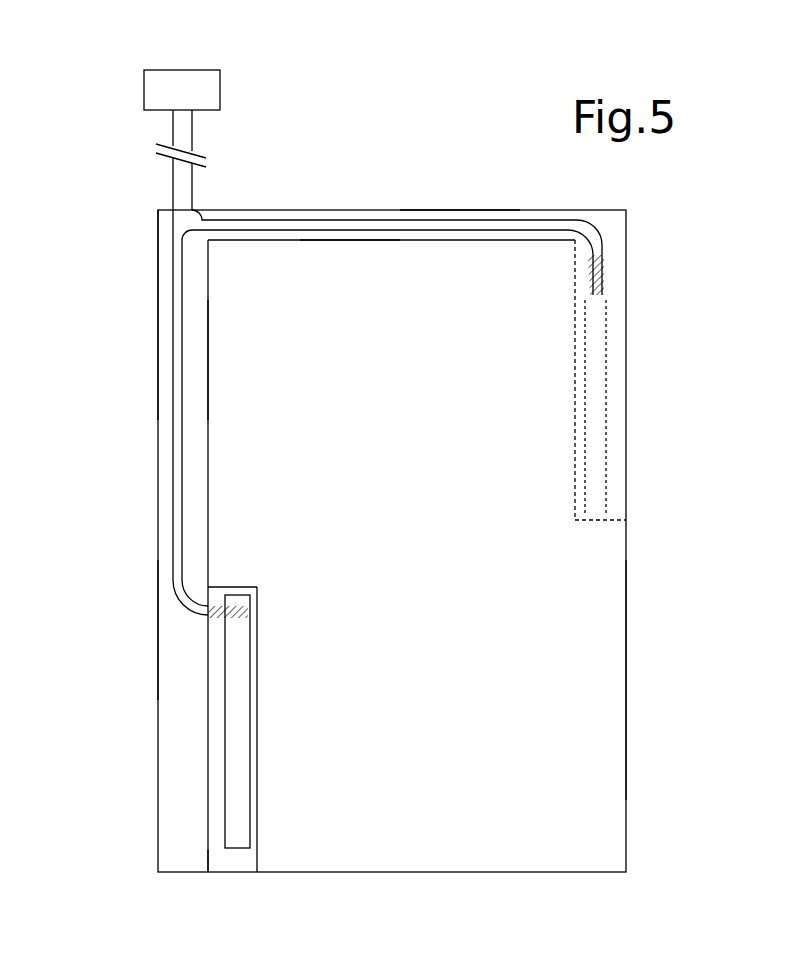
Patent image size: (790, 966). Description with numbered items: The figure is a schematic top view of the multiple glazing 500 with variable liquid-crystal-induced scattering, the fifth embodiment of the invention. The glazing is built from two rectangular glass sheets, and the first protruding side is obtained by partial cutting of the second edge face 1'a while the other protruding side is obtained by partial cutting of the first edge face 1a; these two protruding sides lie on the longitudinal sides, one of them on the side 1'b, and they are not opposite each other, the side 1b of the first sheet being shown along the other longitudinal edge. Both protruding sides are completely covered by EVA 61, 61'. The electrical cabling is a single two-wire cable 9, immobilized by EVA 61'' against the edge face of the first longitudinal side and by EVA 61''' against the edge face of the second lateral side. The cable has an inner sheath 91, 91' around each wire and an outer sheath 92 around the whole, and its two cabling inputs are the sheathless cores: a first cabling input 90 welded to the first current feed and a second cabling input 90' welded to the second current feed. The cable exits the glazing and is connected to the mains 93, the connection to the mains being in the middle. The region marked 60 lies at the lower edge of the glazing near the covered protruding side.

The multiple glazing 500 is at (503, 132).
The mains 93 is at (188, 92).
The outer sheath 92 is at (183, 125).
The cable 9 is at (146, 175).
The inner sheath 91 is at (150, 412).
The inner sheath 91' is at (397, 226).
The EVA 61''' is at (116, 252).
The first edge face 1a is at (190, 637).
The EVA 61'' is at (347, 194).
The second cabling input 90' is at (557, 282).
The EVA 61' is at (554, 407).
The first edge face 1b is at (576, 493).
The second edge face 1'b is at (675, 680).
The second edge face 1'a is at (238, 765).
The EVA 61 is at (277, 721).
The first cabling input 90 is at (241, 574).
The gap 60 is at (216, 876).